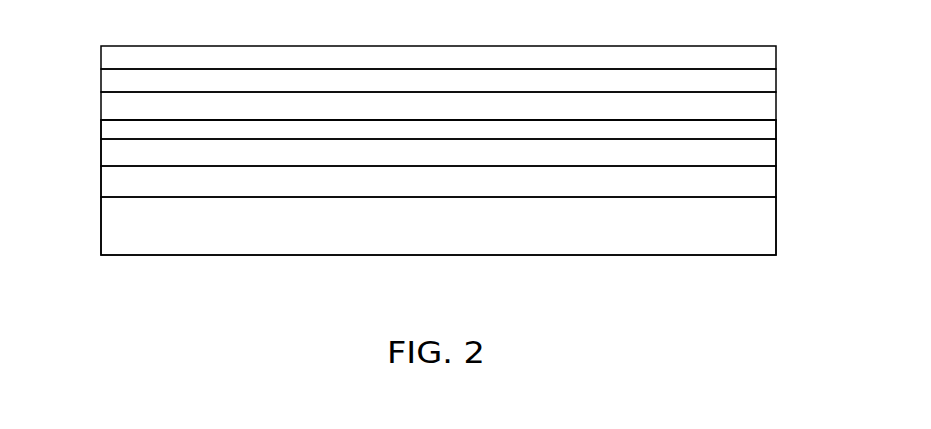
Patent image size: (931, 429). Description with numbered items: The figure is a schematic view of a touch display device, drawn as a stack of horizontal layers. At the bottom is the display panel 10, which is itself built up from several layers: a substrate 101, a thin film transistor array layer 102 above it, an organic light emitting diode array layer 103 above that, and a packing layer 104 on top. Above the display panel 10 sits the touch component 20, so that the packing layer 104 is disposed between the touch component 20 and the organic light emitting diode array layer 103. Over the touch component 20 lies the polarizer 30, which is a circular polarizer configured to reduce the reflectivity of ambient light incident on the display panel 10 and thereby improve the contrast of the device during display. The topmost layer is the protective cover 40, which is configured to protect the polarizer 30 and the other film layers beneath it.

The display panel 10 is at (784, 123).
The substrate 101 is at (100, 232).
The thin film transistor array layer 102 is at (100, 197).
The organic light emitting diode array layer 103 is at (100, 168).
The packing layer 104 is at (105, 123).
The touch component 20 is at (758, 110).
The polarizer 30 is at (760, 83).
The protective cover 40 is at (762, 57).